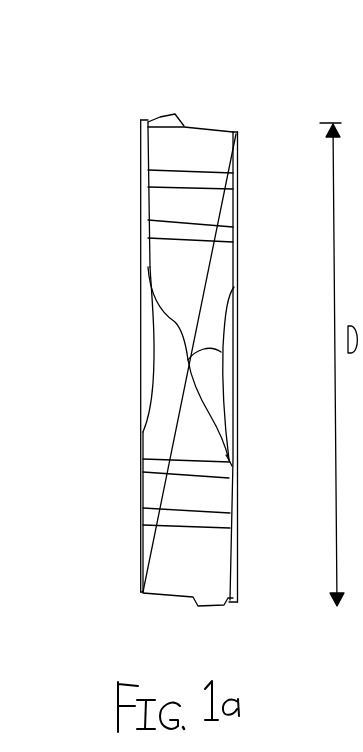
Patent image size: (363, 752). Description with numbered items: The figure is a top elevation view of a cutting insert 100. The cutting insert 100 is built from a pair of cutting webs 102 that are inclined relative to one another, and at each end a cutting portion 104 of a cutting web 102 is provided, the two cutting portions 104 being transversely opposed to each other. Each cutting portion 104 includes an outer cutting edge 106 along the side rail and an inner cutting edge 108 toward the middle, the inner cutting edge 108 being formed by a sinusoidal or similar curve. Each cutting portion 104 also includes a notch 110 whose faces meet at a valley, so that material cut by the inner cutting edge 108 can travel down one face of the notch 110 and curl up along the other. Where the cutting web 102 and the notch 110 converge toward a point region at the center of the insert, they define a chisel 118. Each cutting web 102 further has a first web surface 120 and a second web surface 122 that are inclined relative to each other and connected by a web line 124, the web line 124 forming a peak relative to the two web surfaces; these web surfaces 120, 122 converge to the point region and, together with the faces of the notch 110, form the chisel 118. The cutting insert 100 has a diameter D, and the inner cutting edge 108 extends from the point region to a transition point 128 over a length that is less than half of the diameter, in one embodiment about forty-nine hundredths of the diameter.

The cutting insert 100 is at (173, 62).
The cutting web 102 is at (212, 140).
The cutting portion 104 is at (95, 276).
The outer cutting edge 106 is at (148, 152).
The inner cutting edge 108 is at (150, 322).
The notch 110 is at (160, 341).
The chisel 118 is at (188, 360).
The first web surface 120 is at (207, 560).
The second web surface 122 is at (172, 447).
The web line 124 is at (148, 491).
The transition point 128 is at (232, 459).